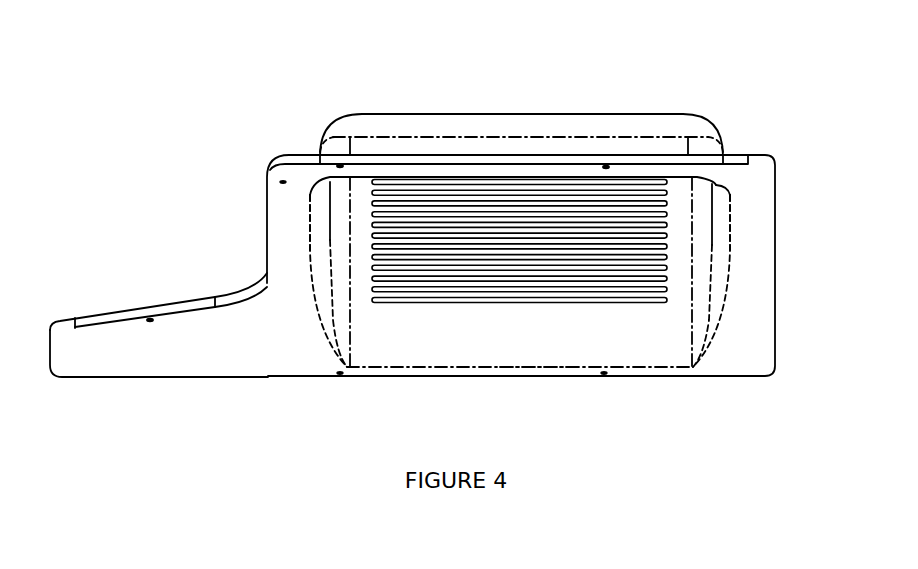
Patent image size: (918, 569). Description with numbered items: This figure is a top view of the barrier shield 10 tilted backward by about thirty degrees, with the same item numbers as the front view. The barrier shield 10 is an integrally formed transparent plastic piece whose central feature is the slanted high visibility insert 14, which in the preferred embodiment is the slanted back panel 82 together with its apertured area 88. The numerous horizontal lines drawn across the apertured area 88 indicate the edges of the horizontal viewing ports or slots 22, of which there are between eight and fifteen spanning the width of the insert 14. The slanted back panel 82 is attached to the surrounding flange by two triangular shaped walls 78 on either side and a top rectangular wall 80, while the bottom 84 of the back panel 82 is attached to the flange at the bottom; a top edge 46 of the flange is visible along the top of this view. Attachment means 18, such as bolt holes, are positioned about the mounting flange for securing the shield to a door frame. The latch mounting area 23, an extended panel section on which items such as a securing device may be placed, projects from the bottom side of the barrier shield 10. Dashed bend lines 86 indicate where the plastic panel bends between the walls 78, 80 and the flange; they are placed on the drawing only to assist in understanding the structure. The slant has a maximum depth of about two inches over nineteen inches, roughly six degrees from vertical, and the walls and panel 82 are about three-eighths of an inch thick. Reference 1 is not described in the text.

The housing 1 is at (765, 185).
The barrier shield 10 is at (622, 104).
The slanted high visibility insert 14 is at (539, 376).
The attachment means 18 is at (281, 181).
The horizontal viewing ports 22 is at (363, 217).
The latch mounting area 23 is at (112, 359).
The top edge 46 is at (410, 156).
The triangular shaped walls 78 is at (304, 262).
The top rectangular wall 80 is at (508, 124).
The slanted back panel 82 is at (443, 341).
The bottom 84 is at (465, 386).
The bend lines 86 is at (695, 275).
The apertured area 88 is at (427, 242).